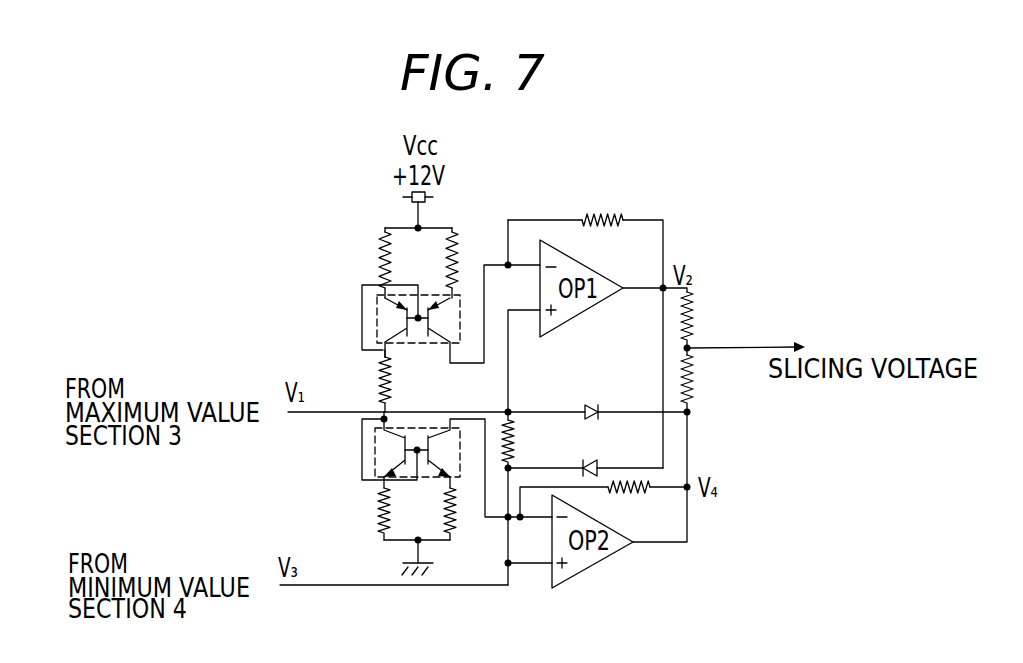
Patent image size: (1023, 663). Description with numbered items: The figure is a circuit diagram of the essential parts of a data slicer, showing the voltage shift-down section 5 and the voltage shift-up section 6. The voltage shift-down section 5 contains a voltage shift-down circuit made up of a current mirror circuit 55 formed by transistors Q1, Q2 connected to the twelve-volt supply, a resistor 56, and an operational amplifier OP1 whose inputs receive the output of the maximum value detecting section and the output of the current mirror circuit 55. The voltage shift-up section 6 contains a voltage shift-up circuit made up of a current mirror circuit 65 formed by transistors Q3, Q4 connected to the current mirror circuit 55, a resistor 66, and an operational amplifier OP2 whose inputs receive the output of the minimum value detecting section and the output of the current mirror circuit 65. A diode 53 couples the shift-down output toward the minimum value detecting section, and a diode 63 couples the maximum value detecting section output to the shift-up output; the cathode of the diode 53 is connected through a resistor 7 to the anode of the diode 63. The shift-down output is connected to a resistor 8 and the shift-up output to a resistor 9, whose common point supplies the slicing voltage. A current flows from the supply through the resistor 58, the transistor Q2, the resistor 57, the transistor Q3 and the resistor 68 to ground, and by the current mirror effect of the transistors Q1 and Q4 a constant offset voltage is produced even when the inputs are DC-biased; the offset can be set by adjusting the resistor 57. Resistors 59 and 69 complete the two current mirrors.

The voltage shift-down section 5 is at (493, 180).
The voltage shift-up section 6 is at (529, 580).
The resistor 7 is at (512, 432).
The resistor 8 is at (697, 312).
The resistor 9 is at (697, 388).
The diode 53 is at (592, 460).
The current mirror circuit 55 is at (377, 300).
The resistor 56 is at (597, 210).
The resistor 57 is at (392, 378).
The resistor 58 is at (377, 252).
The resistor 59 is at (446, 262).
The diode 63 is at (590, 402).
The current mirror circuit 65 is at (375, 448).
The resistor 66 is at (632, 495).
The resistor 68 is at (378, 517).
The resistor 69 is at (445, 515).
The transistor Q1 is at (450, 322).
The transistor Q2 is at (385, 320).
The transistor Q3 is at (400, 452).
The transistor Q4 is at (442, 452).